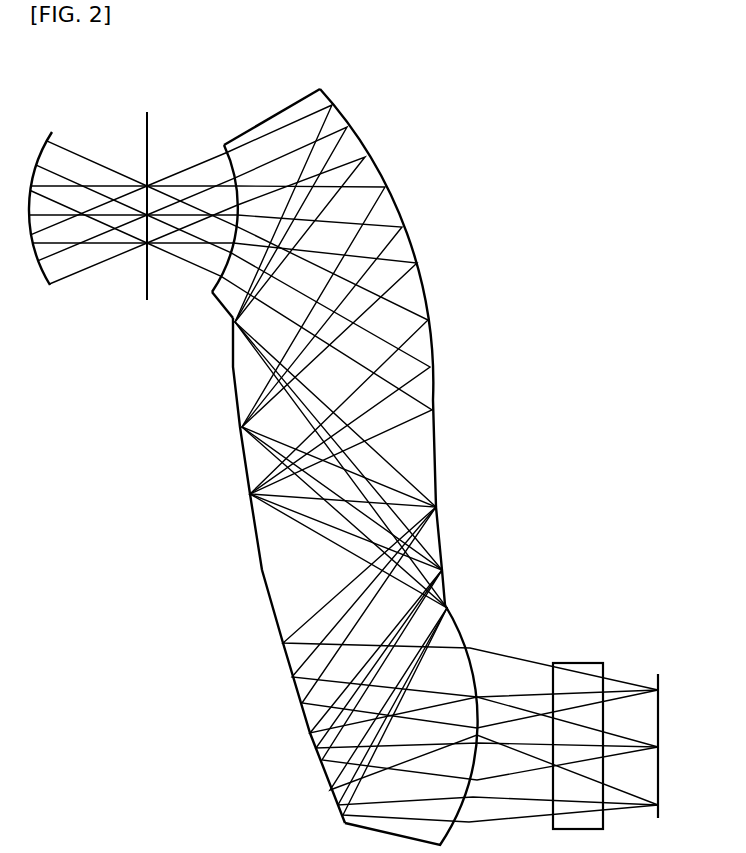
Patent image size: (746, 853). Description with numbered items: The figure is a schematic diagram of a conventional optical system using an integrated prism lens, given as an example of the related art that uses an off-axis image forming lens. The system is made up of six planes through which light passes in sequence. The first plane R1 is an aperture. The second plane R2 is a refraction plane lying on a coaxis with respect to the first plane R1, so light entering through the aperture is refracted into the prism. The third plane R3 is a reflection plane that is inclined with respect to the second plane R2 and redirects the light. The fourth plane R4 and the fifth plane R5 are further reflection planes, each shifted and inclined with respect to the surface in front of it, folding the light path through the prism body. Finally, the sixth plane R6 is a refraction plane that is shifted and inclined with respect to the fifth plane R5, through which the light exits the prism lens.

The first plane R1 is at (147, 140).
The second plane R2 is at (237, 150).
The third plane R3 is at (388, 158).
The fourth plane R4 is at (226, 370).
The fifth plane R5 is at (454, 540).
The sixth plane R6 is at (302, 735).